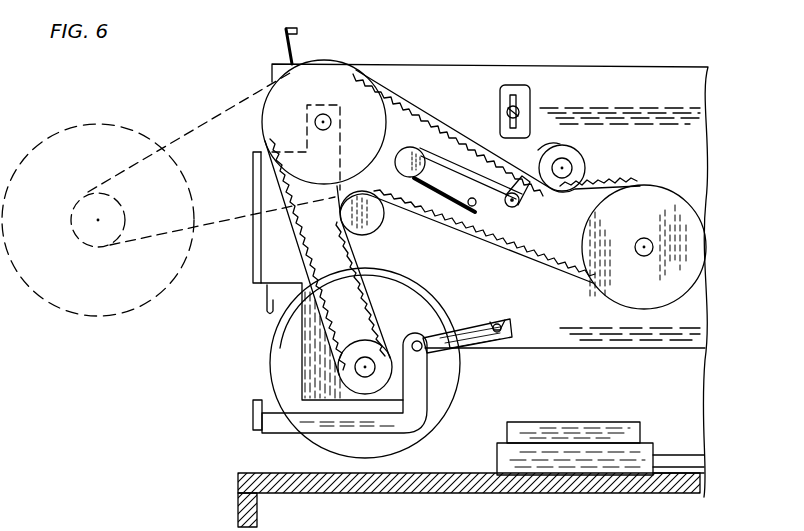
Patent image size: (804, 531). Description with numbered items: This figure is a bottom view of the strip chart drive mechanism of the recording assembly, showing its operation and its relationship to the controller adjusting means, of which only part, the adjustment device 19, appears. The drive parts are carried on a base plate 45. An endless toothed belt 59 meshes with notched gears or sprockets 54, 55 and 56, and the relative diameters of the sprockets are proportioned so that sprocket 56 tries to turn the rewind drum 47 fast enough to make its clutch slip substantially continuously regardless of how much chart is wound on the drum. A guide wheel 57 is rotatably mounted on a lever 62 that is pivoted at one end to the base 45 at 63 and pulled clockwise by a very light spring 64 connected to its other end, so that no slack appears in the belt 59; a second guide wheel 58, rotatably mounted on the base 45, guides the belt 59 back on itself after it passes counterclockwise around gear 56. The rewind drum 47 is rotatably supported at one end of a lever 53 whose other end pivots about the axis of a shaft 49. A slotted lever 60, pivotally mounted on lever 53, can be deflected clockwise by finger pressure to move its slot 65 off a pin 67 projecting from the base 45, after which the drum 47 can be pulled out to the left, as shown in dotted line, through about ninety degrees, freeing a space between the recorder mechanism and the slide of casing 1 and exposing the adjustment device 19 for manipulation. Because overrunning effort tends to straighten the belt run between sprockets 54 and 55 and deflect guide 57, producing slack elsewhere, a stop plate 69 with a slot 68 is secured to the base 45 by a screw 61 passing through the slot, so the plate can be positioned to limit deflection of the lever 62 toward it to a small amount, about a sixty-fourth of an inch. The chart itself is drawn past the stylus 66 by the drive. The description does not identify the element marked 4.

The casing 1 is at (448, 497).
The base support leg 4 is at (262, 516).
The adjustment device 19 is at (643, 442).
The base plate 45 is at (605, 66).
The rewind drum 47 is at (72, 318).
The shaft 49 is at (313, 122).
The lever 53 is at (254, 274).
The sprocket 54 is at (339, 61).
The sprocket 55 is at (648, 184).
The sprocket 56 is at (362, 339).
The guide wheel 57 is at (586, 172).
The guide wheel 58 is at (386, 219).
The endless toothed belt 59 is at (400, 95).
The slotted lever 60 is at (278, 432).
The screw 61 is at (502, 105).
The lever 62 is at (540, 150).
The pivot 63 is at (407, 146).
The spring 64 is at (522, 200).
The slot 65 is at (478, 322).
The stylus 66 is at (282, 37).
The pin 67 is at (498, 322).
The slot 68 is at (520, 103).
The stop plate 69 is at (522, 85).